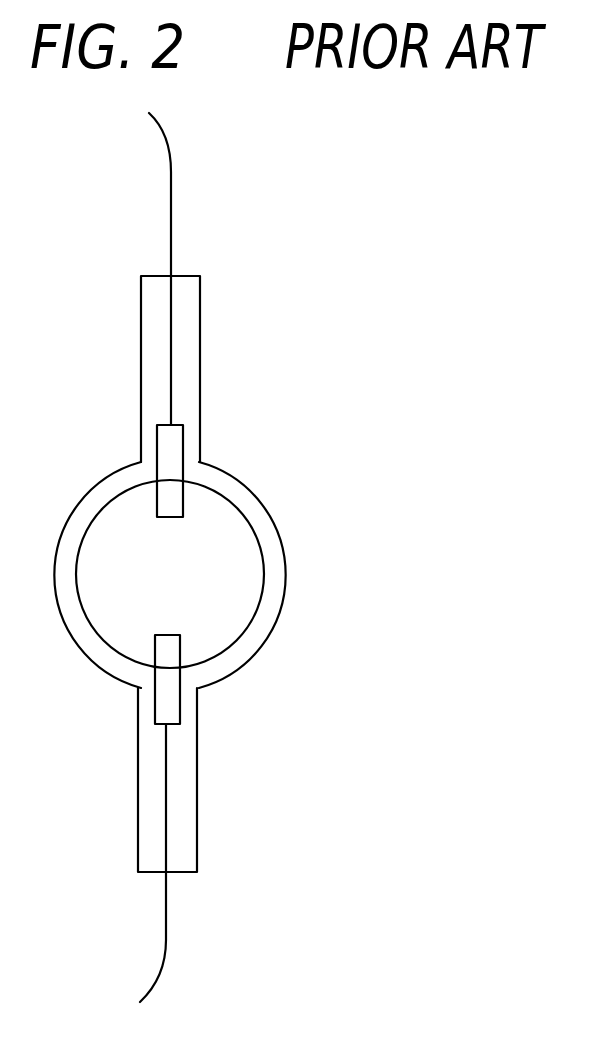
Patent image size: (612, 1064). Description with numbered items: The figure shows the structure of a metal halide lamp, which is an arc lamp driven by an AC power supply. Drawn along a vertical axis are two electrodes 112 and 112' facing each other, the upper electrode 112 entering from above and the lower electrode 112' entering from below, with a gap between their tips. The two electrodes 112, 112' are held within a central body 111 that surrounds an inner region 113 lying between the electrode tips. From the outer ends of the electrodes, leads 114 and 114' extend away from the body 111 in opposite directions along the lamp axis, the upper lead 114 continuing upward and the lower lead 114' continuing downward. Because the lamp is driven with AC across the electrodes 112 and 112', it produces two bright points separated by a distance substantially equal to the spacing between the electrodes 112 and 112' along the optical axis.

The ring-shaped housing / support 111 is at (275, 543).
The electrode 112 is at (229, 471).
The electrode 112' is at (233, 679).
The inner circular chamber / discharge space 113 is at (245, 617).
The upper lead wire 114 is at (217, 269).
The lower lead wire 114' is at (212, 863).